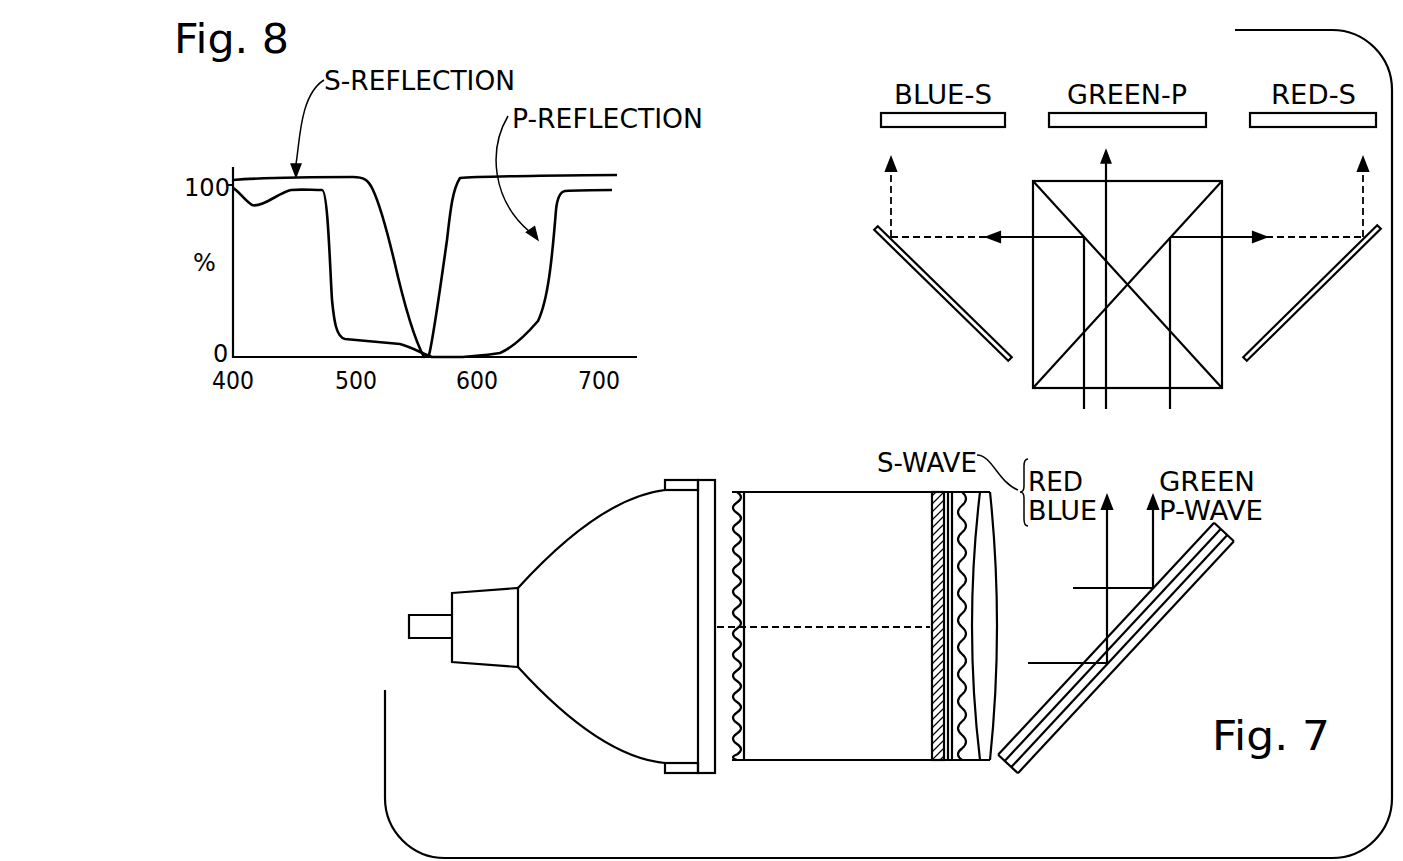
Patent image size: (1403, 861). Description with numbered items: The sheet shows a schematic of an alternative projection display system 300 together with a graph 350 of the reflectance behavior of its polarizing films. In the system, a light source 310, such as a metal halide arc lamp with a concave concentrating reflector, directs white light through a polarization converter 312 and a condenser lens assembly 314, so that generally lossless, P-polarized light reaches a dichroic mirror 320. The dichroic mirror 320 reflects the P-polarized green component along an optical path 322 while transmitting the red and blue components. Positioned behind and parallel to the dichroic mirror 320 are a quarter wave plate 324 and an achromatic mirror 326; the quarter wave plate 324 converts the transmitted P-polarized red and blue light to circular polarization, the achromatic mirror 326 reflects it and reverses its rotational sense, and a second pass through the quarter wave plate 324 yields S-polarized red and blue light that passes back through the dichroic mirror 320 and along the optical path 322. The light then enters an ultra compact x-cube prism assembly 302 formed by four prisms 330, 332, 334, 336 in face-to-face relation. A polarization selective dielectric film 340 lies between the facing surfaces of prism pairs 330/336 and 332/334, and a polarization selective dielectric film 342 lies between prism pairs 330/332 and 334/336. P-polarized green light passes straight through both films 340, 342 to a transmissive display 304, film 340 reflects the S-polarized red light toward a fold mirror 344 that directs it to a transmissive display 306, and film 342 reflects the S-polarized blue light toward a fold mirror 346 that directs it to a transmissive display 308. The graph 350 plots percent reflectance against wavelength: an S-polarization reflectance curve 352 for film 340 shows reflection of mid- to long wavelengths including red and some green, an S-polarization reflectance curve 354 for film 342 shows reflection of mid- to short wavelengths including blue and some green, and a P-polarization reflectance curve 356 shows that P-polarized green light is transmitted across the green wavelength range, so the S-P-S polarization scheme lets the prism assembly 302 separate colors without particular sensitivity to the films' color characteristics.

In FIG. 7, the projection display system 300 is at (855, 420).
In FIG. 7, the prism assembly 302 is at (1237, 404).
In FIG. 7, the transmissive display 304 is at (1173, 127).
In FIG. 7, the transmissive display 306 is at (1320, 127).
In FIG. 7, the transmissive display 308 is at (971, 127).
In FIG. 7, the light source 310 is at (560, 728).
In FIG. 7, the polarization converter 312 is at (948, 773).
In FIG. 7, the condenser lens assembly 314 is at (987, 762).
In FIG. 7, the dichroic mirror 320 is at (1040, 717).
In FIG. 7, the optical path 322 is at (1149, 559).
In FIG. 7, the quarter wave plate 324 is at (1137, 624).
In FIG. 7, the achromatic mirror 326 is at (1210, 565).
In FIG. 7, the prism 330 is at (1131, 380).
In FIG. 7, the prism 332 is at (1214, 299).
In FIG. 7, the prism 334 is at (1201, 186).
In FIG. 7, the prism 336 is at (1046, 295).
In FIG. 7, the polarization selective dielectric film 340 is at (1121, 302).
In FIG. 7, the polarization selective dielectric film 342 is at (1115, 271).
In FIG. 7, the fold mirror 344 is at (1317, 295).
In FIG. 7, the fold mirror 346 is at (941, 297).
In FIG. 8, the graph 350 is at (261, 115).
In FIG. 8, the S-polarization reflectance curve 352 is at (539, 177).
In FIG. 8, the S-polarization reflectance curve 354 is at (334, 176).
In FIG. 8, the P-polarization reflectance curve 356 is at (550, 271).